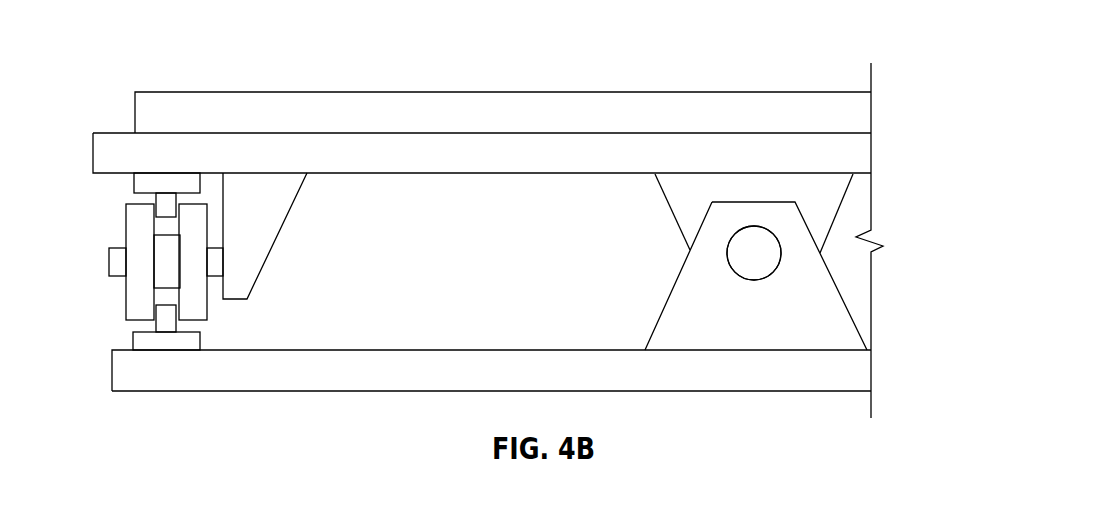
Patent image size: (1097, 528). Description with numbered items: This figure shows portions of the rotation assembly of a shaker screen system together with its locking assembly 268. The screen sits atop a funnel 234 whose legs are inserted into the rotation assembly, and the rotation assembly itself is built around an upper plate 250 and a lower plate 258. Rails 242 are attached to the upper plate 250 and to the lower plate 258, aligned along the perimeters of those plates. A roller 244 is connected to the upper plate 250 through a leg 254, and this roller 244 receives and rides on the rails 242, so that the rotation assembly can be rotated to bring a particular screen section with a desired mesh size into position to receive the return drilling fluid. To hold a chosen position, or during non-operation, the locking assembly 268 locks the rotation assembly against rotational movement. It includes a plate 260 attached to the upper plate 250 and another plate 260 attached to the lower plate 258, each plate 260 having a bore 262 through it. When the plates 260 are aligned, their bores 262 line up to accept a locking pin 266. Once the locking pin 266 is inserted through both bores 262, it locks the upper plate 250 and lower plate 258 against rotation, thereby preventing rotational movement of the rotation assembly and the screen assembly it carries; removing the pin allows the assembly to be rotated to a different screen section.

The funnel 234 is at (260, 92).
The rails 242 is at (133, 182).
The roller 244 is at (122, 307).
The upper plate 250 is at (112, 133).
The leg 254 is at (277, 235).
The lower plate 258 is at (788, 382).
The plate 260 is at (830, 237).
The bore 262 is at (753, 226).
The locking pin 266 is at (747, 262).
The locking assembly 268 is at (912, 178).